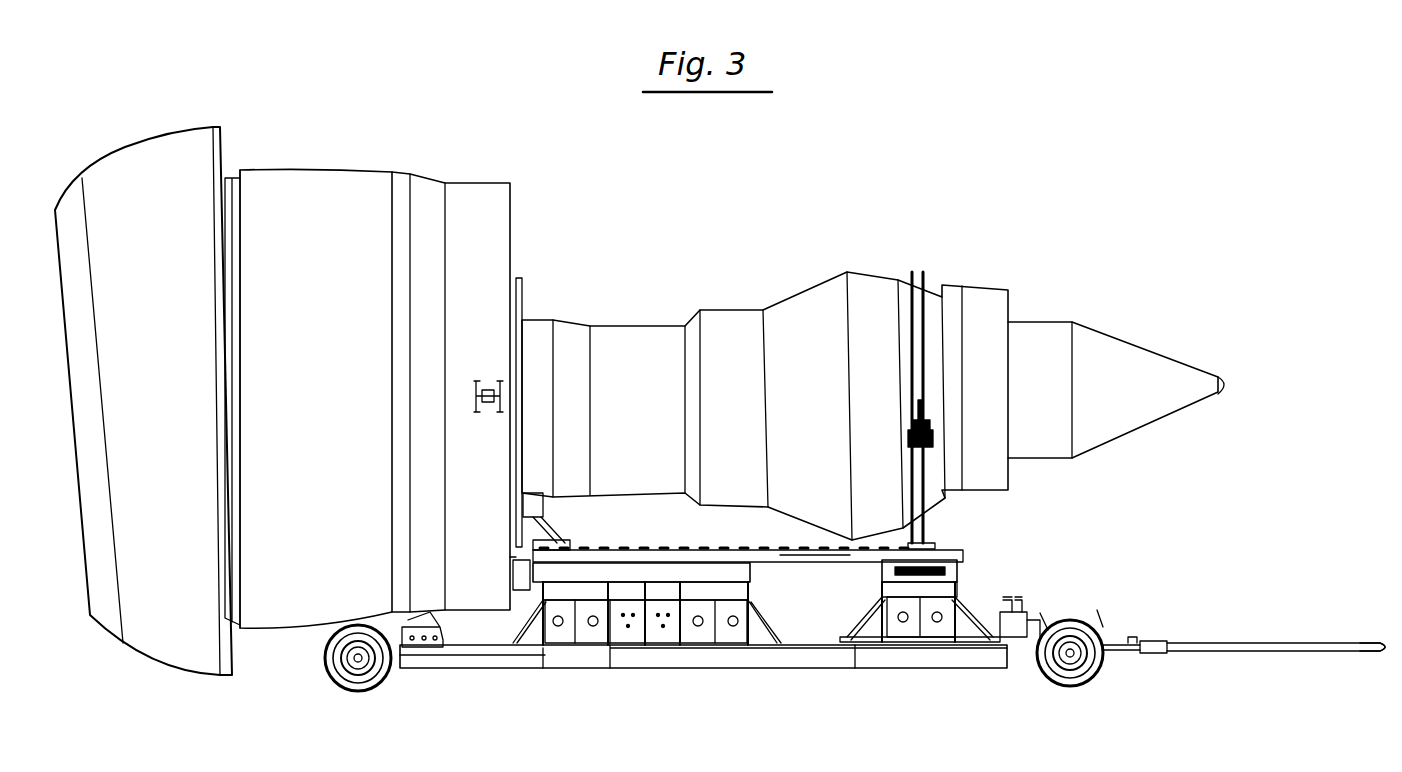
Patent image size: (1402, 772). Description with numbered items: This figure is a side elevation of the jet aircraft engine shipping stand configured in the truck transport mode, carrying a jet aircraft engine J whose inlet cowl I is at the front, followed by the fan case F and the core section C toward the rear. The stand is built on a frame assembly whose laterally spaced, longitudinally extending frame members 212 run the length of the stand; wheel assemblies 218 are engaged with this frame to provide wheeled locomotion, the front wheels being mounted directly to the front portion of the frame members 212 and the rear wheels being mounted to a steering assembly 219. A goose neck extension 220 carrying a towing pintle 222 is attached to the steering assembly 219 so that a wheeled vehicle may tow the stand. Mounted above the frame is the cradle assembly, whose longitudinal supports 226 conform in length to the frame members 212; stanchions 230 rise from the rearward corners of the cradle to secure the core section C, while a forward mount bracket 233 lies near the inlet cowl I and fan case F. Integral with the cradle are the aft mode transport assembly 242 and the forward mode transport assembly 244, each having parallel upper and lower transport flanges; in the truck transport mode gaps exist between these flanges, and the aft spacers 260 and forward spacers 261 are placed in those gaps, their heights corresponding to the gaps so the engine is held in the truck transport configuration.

The inlet cowl I is at (147, 150).
The fan case F is at (345, 170).
The jet aircraft engine J is at (622, 274).
The core section C is at (737, 310).
The longitudinal frame members 212 is at (493, 658).
The wheel assemblies 218 is at (368, 693).
The steering assembly 219 is at (1112, 622).
The goose neck extension 220 is at (1210, 643).
The towing pintle 222 is at (1372, 640).
The longitudinal supports 226 is at (805, 558).
The stanchions 230 is at (935, 500).
The forward engine mount bracket 233 is at (558, 537).
The aft mode transport assemblies 242 is at (980, 567).
The forward mode transport assemblies 244 is at (511, 574).
The aft spacers 260 is at (990, 548).
The forward spacers 261 is at (727, 570).